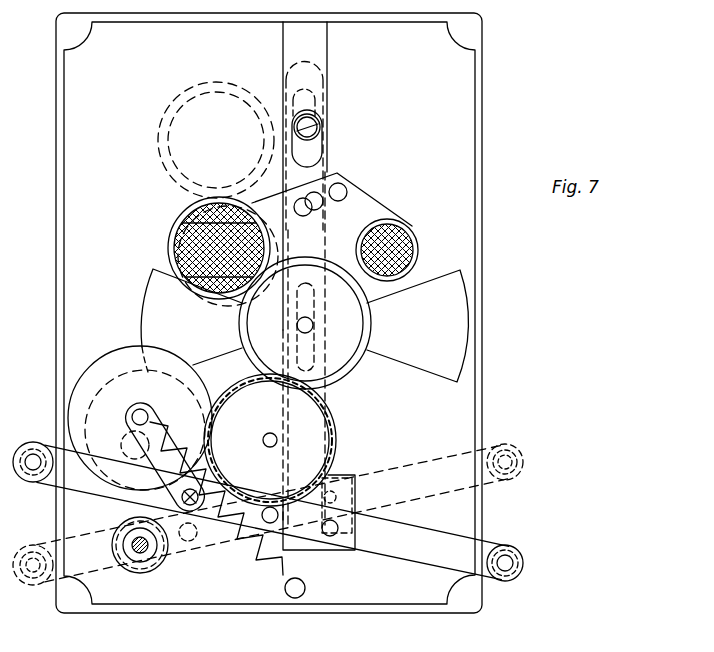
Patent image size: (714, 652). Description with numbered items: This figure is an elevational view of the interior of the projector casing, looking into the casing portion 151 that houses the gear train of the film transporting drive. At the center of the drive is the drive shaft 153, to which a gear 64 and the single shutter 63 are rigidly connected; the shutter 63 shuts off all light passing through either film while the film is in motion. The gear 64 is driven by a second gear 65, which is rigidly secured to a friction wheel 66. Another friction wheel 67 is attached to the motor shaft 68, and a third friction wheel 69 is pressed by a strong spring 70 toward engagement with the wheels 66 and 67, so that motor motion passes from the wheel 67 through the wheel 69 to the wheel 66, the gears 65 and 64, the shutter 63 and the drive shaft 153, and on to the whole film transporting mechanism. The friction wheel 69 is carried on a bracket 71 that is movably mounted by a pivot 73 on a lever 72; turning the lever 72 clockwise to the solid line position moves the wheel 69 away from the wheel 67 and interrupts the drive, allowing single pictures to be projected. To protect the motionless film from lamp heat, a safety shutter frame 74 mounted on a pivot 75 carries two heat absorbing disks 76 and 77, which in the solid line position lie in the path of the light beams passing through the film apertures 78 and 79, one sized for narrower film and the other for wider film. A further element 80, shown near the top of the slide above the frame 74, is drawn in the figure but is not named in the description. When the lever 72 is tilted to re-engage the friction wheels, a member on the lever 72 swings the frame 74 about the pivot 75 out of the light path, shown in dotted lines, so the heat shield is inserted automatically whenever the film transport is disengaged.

The casing portion 151 is at (485, 64).
The screw 80 is at (322, 140).
The pivot 75 is at (347, 186).
The safety shutter frame 74 is at (378, 203).
The film aperture 78 is at (400, 228).
The heat absorbing disk 76 is at (418, 255).
The film aperture 79 is at (201, 208).
The heat absorbing disk 77 is at (178, 245).
The drive shaft 153 is at (303, 317).
The gear 64 is at (350, 368).
The shutter 63 is at (441, 381).
The third friction wheel 69 is at (98, 382).
The bracket 71 is at (167, 402).
The friction wheel 66 is at (330, 413).
The second gear 65 is at (335, 451).
The pivot 73 is at (280, 515).
The friction wheel 67 is at (160, 567).
The motor shaft 68 is at (138, 553).
The spring 70 is at (280, 563).
The lever 72 is at (428, 567).